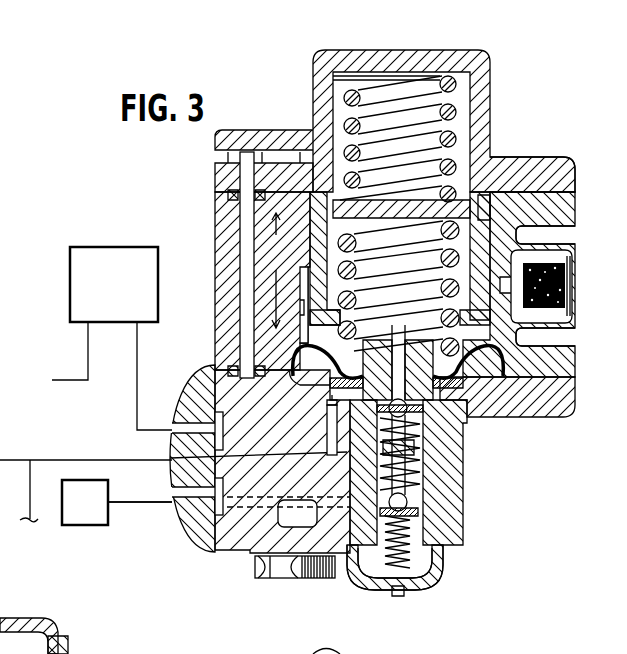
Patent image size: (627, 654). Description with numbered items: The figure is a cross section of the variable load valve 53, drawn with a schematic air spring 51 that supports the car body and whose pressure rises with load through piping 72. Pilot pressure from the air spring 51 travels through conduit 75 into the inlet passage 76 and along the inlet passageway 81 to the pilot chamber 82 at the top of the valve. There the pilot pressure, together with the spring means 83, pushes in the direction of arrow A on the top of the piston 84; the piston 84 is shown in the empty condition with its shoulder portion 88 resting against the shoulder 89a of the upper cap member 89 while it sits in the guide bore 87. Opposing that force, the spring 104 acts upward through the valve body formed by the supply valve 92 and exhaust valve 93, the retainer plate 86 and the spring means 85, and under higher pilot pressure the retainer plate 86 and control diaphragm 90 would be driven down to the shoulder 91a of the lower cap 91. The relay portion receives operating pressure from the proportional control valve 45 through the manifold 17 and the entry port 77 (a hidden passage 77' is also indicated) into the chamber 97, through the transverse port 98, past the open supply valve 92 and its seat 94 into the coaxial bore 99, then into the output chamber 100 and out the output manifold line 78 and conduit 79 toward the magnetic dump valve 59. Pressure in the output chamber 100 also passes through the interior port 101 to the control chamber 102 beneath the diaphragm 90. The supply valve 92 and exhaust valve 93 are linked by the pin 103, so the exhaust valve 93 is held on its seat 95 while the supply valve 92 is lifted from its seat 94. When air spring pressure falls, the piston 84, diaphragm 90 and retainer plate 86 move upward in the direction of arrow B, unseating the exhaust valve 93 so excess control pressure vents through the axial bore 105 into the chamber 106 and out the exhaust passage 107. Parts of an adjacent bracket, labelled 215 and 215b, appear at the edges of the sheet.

The variable load valve 53 is at (292, 109).
The upper cap member 89 is at (460, 56).
The shoulder of upper cap member 89a is at (482, 168).
The pilot chamber 82 is at (462, 112).
The spring means 83 is at (432, 140).
The piston 84 is at (380, 196).
The spring means 85 is at (335, 258).
The shoulder portion 88 is at (486, 205).
The guide bore 87 is at (520, 237).
The exhaust passage 107 is at (572, 262).
The axial bore 105 is at (525, 338).
The retainer plate 86 is at (458, 350).
The control diaphragm 90 is at (563, 417).
The chamber 106 is at (320, 328).
The control chamber 102 is at (323, 382).
The inlet passageway 81 is at (243, 260).
The air spring 51 is at (158, 298).
The piping 72 is at (70, 378).
The conduit 75 is at (137, 414).
The inlet passage 76 is at (182, 405).
The conduit 79 is at (68, 462).
The magnetic dump valve 59 is at (30, 505).
The proportional control valve 45 is at (85, 502).
The entry port 77 is at (140, 487).
The manifold 17 is at (133, 505).
The output manifold line 78 is at (250, 460).
The pin 103 is at (317, 503).
The passage 77' is at (284, 514).
The interior port 101 is at (332, 430).
The shoulder of lower cap 91a is at (330, 414).
The lower cap 91 is at (450, 460).
The exhaust valve seat 95 is at (440, 418).
The exhaust valve 93 is at (432, 445).
The output chamber 100 is at (430, 470).
The coaxial bore 99 is at (420, 495).
The supply valve seat 94 is at (412, 500).
The supply valve 92 is at (418, 525).
The chamber 97 is at (418, 548).
The spring 104 is at (440, 570).
The transverse port 98 is at (333, 576).
The bracket 215 is at (0, 614).
The bracket 215b is at (394, 648).
The arrow A is at (282, 299).
The arrow B is at (283, 230).